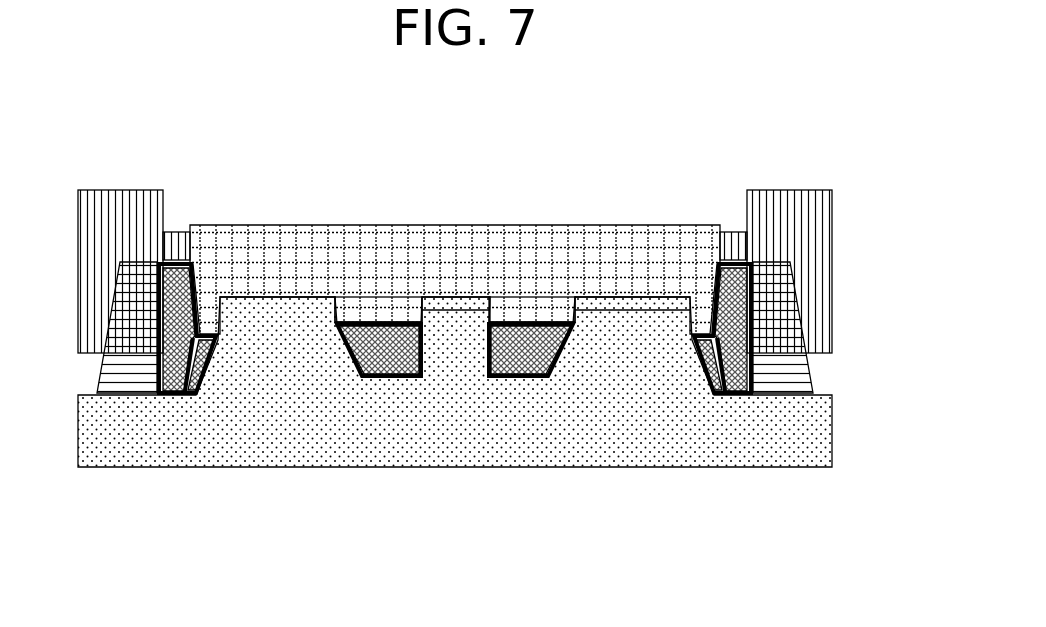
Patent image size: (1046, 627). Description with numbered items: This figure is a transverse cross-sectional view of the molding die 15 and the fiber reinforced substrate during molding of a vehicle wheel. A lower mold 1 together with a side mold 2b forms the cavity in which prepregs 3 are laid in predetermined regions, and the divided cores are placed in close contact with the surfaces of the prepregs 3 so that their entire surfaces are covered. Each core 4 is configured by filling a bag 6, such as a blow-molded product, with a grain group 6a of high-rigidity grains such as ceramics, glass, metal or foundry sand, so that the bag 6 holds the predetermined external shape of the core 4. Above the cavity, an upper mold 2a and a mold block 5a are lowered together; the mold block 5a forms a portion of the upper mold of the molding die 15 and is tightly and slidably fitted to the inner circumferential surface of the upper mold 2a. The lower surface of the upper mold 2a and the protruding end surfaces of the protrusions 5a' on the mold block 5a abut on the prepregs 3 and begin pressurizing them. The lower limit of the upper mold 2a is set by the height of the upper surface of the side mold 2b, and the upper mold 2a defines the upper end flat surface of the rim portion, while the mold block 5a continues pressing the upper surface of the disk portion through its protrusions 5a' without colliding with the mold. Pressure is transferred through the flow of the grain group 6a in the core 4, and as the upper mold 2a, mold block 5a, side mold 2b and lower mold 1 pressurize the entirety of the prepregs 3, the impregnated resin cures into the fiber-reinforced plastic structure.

The lower mold 1 is at (398, 441).
The upper mold 2a is at (798, 213).
The side mold 2b is at (780, 283).
The prepreg 3 is at (211, 306).
The core 4 is at (380, 382).
The mold block 5a is at (455, 238).
The protrusions 5a' is at (457, 246).
The bag 6 is at (753, 323).
The grain group 6a is at (758, 360).
The molding die 15 is at (583, 131).